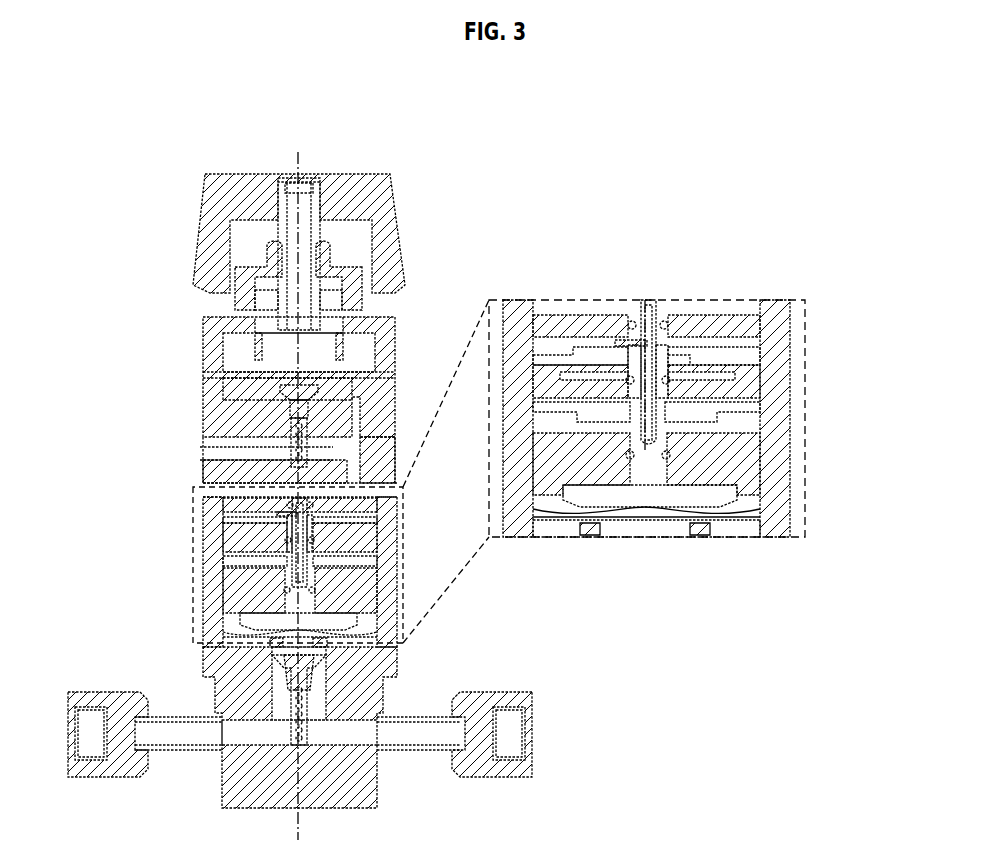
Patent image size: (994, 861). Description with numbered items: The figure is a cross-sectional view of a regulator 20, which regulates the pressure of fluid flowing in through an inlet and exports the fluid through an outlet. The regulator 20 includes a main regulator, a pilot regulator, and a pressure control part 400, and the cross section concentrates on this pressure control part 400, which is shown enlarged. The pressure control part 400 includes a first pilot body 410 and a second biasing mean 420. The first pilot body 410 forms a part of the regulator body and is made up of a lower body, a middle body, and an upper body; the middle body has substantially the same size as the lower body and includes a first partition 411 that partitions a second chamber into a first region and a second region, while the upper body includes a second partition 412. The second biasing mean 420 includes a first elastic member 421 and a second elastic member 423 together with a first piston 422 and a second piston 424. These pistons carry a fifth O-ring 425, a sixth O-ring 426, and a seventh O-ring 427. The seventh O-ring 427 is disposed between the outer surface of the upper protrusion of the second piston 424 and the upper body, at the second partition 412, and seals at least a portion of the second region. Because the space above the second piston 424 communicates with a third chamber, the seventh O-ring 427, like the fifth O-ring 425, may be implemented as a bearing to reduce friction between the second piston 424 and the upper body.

The regulator 20 is at (401, 131).
The pressure control part 400 is at (583, 300).
The first pilot body 410 is at (802, 540).
The first partition 411 is at (795, 530).
The second partition 412 is at (593, 330).
The second biasing mean 420 is at (866, 315).
The first elastic member 421 is at (660, 447).
The first piston 422 is at (760, 455).
The second elastic member 423 is at (693, 457).
The second piston 424 is at (752, 415).
The fifth O-ring 425 is at (718, 357).
The sixth O-ring 426 is at (666, 380).
The seventh O-ring 427 is at (668, 325).